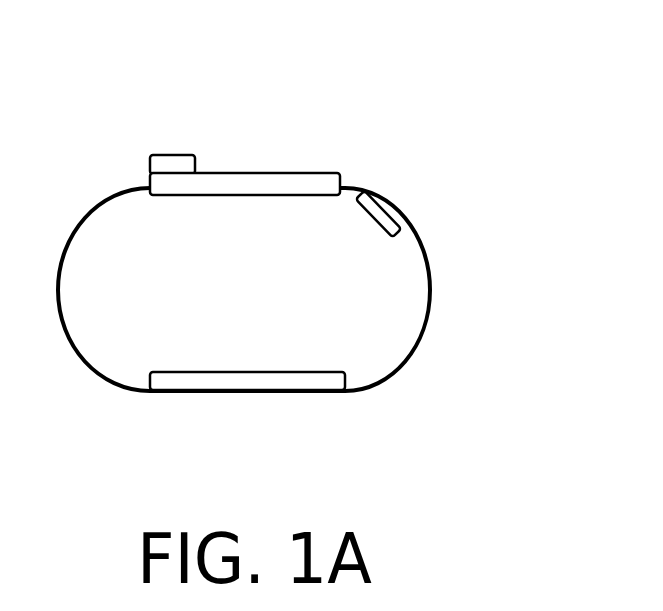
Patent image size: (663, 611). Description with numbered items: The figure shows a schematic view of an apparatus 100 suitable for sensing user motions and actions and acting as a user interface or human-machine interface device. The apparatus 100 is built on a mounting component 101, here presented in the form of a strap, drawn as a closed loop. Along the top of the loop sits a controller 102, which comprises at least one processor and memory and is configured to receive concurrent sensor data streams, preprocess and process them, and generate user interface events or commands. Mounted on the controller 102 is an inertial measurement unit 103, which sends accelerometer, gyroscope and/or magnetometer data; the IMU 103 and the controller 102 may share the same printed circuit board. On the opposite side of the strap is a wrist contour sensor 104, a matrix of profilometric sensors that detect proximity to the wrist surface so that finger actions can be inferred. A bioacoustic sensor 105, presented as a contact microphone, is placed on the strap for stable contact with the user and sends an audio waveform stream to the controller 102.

The apparatus 100 is at (280, 256).
The mounting component 101 is at (385, 397).
The controller 102 is at (262, 160).
The inertial measurement unit 103 is at (166, 141).
The wrist contour sensor 104 is at (169, 358).
The bioacoustic sensor 105 is at (364, 231).